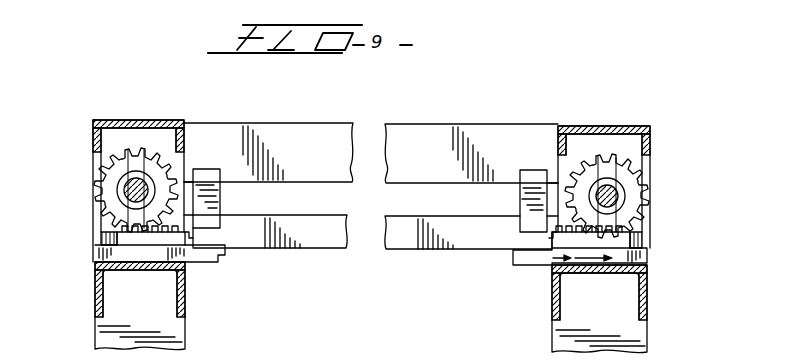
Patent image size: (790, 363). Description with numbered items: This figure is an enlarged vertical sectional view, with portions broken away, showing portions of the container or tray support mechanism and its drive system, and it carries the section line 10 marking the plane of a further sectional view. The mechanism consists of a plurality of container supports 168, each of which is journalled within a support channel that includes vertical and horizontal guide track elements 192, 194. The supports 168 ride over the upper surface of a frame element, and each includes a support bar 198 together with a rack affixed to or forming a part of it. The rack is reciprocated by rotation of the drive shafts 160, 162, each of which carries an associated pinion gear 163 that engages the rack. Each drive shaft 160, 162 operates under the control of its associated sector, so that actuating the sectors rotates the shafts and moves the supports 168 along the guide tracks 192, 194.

The section line 10- 10 is at (100, 97).
The drive shaft 160 is at (124, 194).
The left-hand drive shaft 162 is at (606, 190).
The pinion gear 163 is at (128, 178).
The container support 168 is at (207, 266).
The vertical guide track element 192 is at (640, 262).
The horizontal guide track element 194 is at (646, 240).
The support bar 198 is at (222, 253).